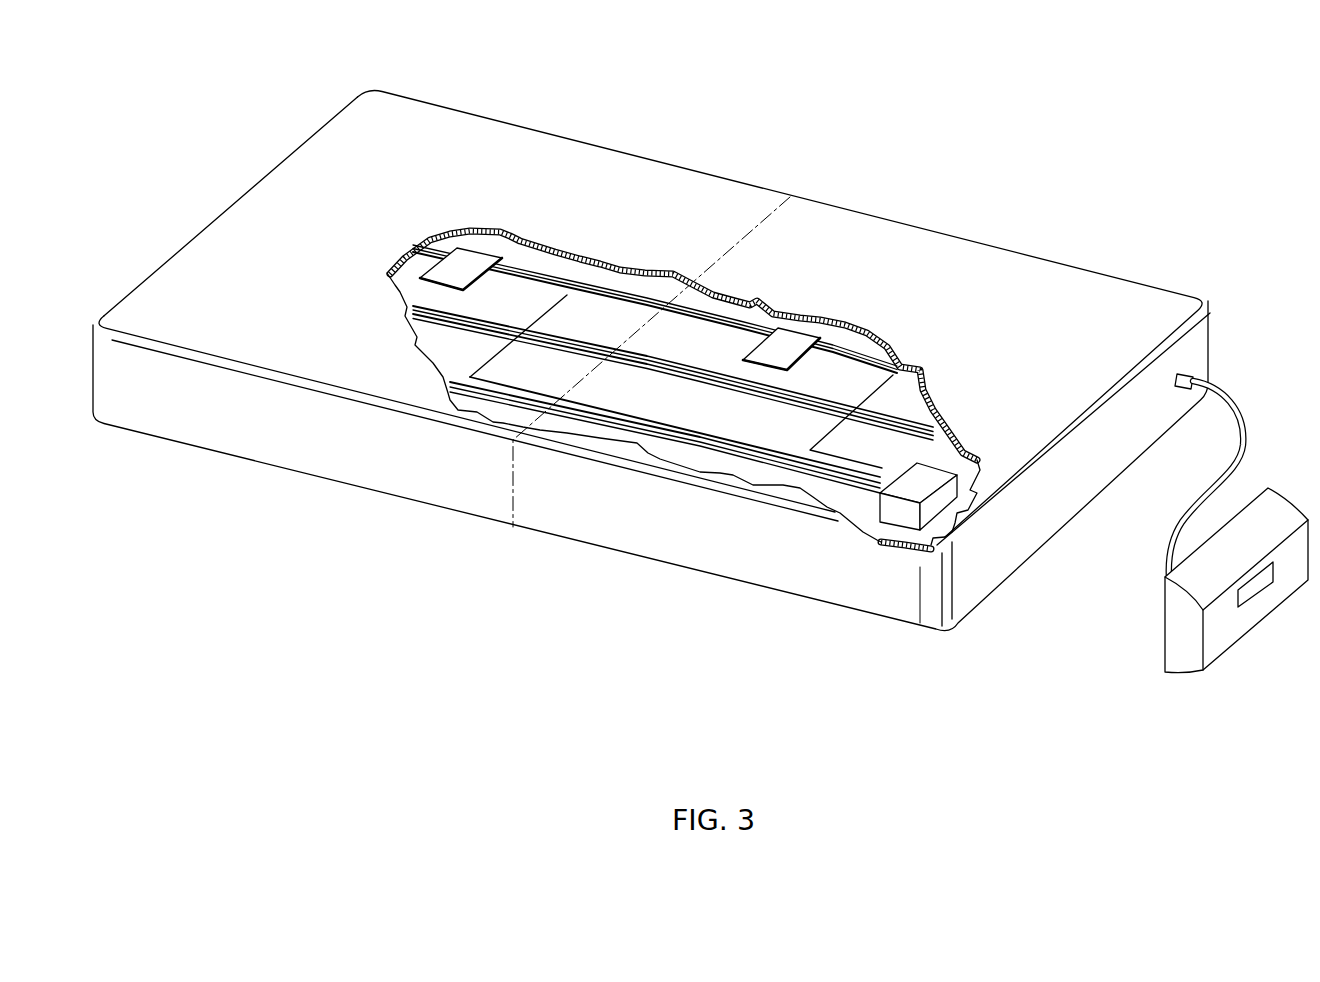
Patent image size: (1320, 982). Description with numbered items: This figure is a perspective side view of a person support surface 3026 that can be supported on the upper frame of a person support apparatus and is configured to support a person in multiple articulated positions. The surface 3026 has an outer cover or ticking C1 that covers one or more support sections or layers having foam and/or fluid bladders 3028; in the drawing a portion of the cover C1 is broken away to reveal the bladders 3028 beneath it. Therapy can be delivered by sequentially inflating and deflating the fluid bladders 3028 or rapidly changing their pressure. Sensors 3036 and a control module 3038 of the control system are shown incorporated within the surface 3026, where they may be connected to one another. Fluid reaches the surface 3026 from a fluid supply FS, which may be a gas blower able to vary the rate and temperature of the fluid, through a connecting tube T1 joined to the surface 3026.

The person support surface 3026 is at (680, 149).
The outer cover or ticking C1 is at (1043, 288).
The fluid bladders 3028 is at (581, 316).
The sensors 3036 is at (443, 277).
The control modules 3038 is at (905, 512).
The connecting tube T1 is at (1243, 412).
The fluid supply FS is at (1168, 650).